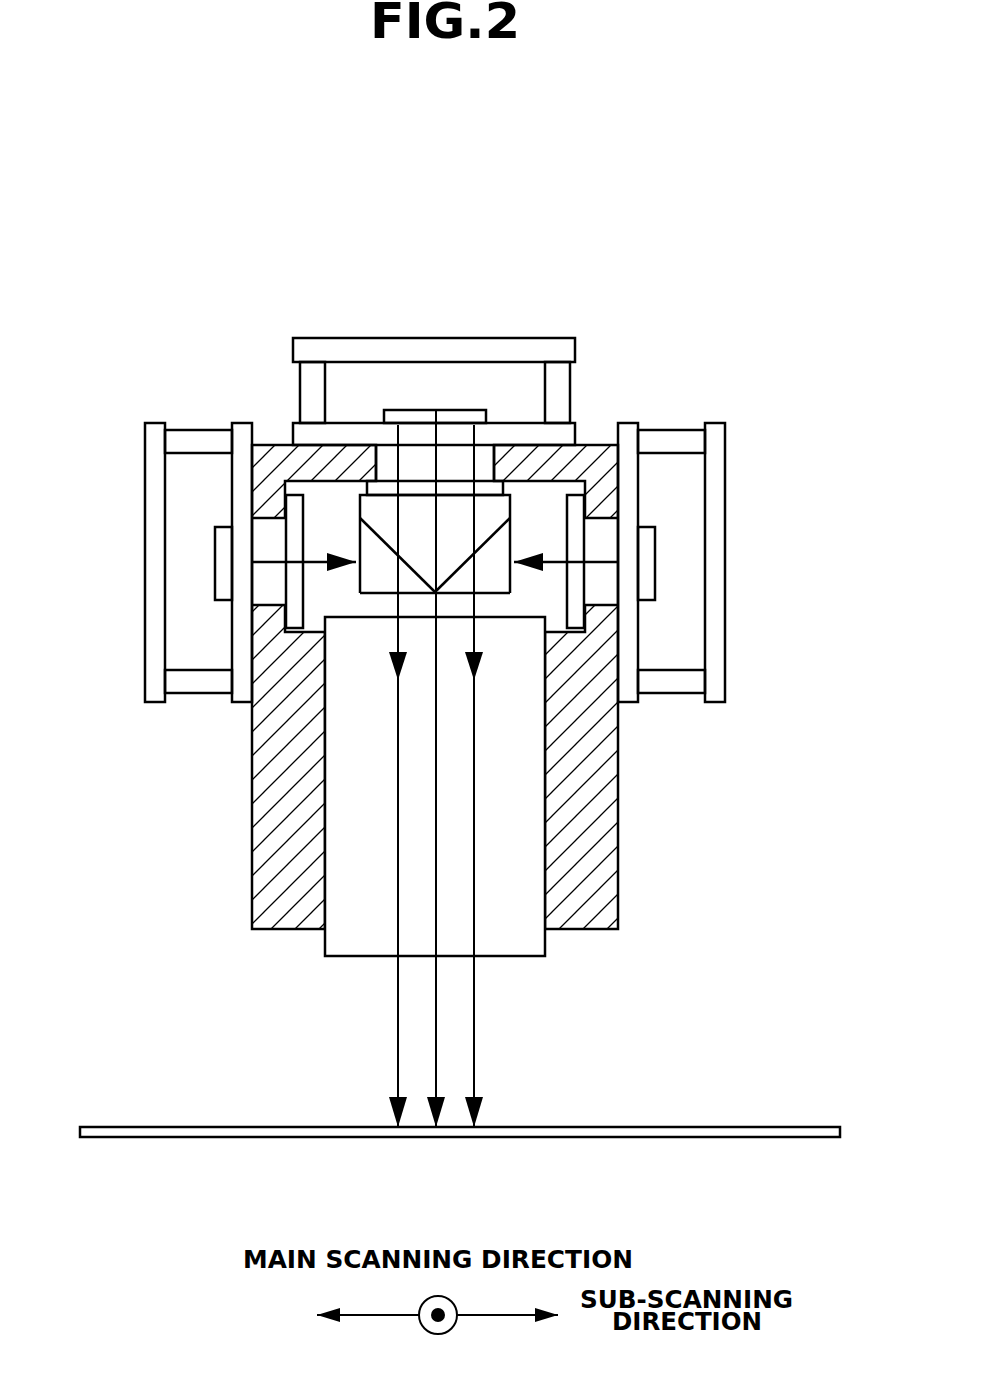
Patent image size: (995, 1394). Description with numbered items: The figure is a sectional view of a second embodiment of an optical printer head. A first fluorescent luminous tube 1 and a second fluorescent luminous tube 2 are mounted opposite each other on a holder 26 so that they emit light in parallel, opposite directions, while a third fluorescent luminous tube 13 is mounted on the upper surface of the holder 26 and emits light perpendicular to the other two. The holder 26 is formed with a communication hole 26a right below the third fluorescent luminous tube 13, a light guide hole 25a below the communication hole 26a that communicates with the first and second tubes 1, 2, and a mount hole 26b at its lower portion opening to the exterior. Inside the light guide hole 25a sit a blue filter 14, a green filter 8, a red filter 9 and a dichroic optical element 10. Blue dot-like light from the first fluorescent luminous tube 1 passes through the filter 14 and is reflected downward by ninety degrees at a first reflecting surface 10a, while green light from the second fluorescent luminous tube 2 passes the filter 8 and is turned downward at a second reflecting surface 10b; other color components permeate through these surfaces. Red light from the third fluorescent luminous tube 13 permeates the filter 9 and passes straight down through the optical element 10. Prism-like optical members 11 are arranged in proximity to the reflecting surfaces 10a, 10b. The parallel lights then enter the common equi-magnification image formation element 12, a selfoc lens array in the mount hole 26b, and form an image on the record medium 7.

The first fluorescent luminous tube 1 is at (143, 547).
The second fluorescent luminous tube 2 is at (725, 575).
The record medium 7 is at (708, 1125).
The green filter 8 is at (590, 612).
The red filter 9 is at (480, 487).
The dichroic optical element 10 is at (443, 479).
The first reflecting surface 10a is at (377, 543).
The second reflecting surface 10b is at (490, 545).
The prism-like optical members 11 is at (375, 582).
The common equi-magnification image formation element 12 is at (520, 758).
The third fluorescent luminous tube 13 is at (418, 348).
The blue filter 14 is at (292, 577).
The light guide hole 25a is at (543, 495).
The holder 26 is at (444, 603).
The communication hole 26a is at (358, 458).
The mount hole 26b is at (548, 827).